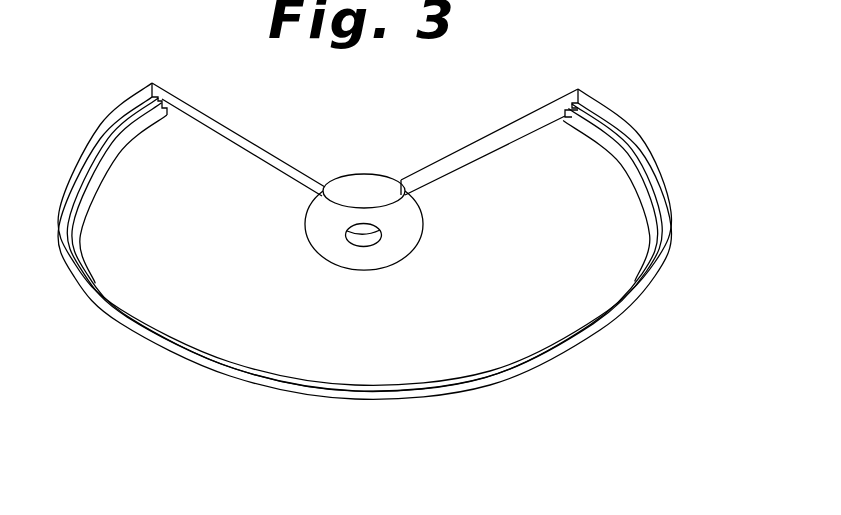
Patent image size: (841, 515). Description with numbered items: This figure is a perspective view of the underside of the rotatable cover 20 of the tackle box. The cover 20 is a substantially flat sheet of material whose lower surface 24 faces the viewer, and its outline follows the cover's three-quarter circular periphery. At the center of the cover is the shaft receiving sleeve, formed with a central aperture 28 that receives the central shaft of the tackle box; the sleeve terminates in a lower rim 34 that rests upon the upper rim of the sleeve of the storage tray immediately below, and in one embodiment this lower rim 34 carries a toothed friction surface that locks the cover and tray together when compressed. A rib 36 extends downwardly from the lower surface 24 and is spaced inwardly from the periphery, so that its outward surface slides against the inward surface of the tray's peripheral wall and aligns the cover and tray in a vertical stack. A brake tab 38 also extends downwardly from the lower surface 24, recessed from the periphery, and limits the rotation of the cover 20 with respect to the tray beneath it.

The rotatable cover 20 is at (619, 382).
The lower surface 24 is at (239, 319).
The rib 36 is at (658, 171).
The brake tab 38 is at (572, 117).
The central aperture 28 is at (364, 247).
The lower rim 34 is at (406, 253).